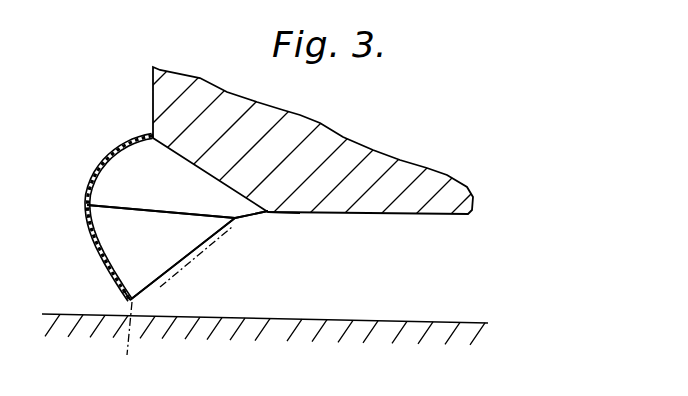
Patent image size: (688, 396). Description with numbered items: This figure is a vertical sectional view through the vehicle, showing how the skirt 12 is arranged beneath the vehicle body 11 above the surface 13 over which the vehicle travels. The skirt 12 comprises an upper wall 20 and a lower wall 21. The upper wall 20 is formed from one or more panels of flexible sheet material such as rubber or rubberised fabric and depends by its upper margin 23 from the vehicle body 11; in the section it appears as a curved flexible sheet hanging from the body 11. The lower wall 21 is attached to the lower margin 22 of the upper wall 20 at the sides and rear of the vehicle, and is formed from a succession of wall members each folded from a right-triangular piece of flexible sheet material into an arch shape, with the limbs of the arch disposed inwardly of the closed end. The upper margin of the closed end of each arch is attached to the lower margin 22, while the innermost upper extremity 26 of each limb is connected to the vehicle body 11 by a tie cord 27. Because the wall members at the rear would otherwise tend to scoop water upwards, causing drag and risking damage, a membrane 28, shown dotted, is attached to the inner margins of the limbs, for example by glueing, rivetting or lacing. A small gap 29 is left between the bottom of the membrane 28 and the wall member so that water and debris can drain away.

The vehicle body 11 is at (291, 148).
The skirt 12 is at (92, 261).
The base surface 13 is at (344, 286).
The upper wall 20 is at (111, 152).
The lower wall 21 is at (117, 283).
The lower margin 22 is at (86, 205).
The upper margin 23 is at (152, 133).
The innermost upper extremity 26 is at (238, 220).
The tie cord 27 is at (252, 216).
The membrane 28 is at (185, 266).
The small gap 29 is at (122, 343).